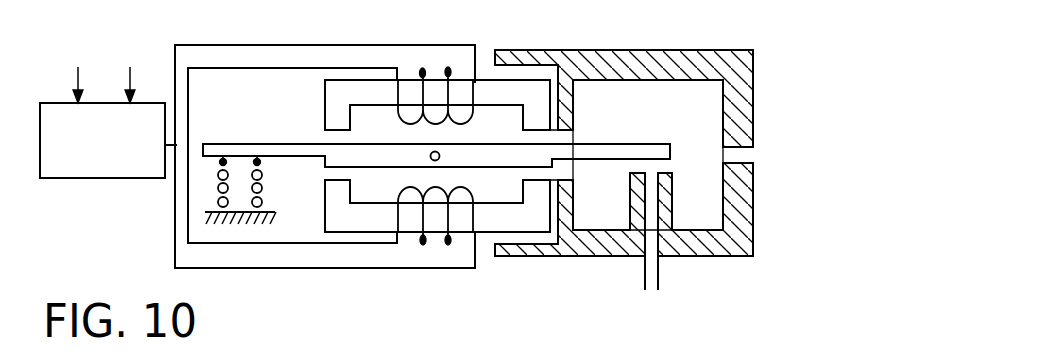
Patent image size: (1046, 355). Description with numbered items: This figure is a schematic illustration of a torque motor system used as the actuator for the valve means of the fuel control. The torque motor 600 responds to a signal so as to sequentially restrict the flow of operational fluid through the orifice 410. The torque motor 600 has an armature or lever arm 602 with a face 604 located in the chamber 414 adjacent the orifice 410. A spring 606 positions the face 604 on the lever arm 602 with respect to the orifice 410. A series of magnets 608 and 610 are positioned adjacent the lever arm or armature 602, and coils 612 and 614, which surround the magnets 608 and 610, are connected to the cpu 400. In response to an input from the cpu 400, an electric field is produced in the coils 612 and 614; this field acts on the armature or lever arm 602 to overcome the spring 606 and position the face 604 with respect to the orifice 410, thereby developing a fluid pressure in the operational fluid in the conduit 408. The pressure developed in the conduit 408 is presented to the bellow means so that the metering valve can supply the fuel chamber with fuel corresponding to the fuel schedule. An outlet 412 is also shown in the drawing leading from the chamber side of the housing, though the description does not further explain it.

The cpu 400 is at (68, 178).
The torque motor 600 is at (460, 286).
The armature or lever arm 602 is at (352, 152).
The face 604 is at (670, 168).
The spring 606 is at (262, 190).
The magnet 608 is at (483, 223).
The magnet 610 is at (483, 90).
The coil 612 is at (449, 243).
The coil 614 is at (421, 73).
The orifice 410 is at (697, 232).
The outlet 412 is at (755, 155).
The chamber 414 is at (635, 110).
The conduit 408 is at (644, 271).